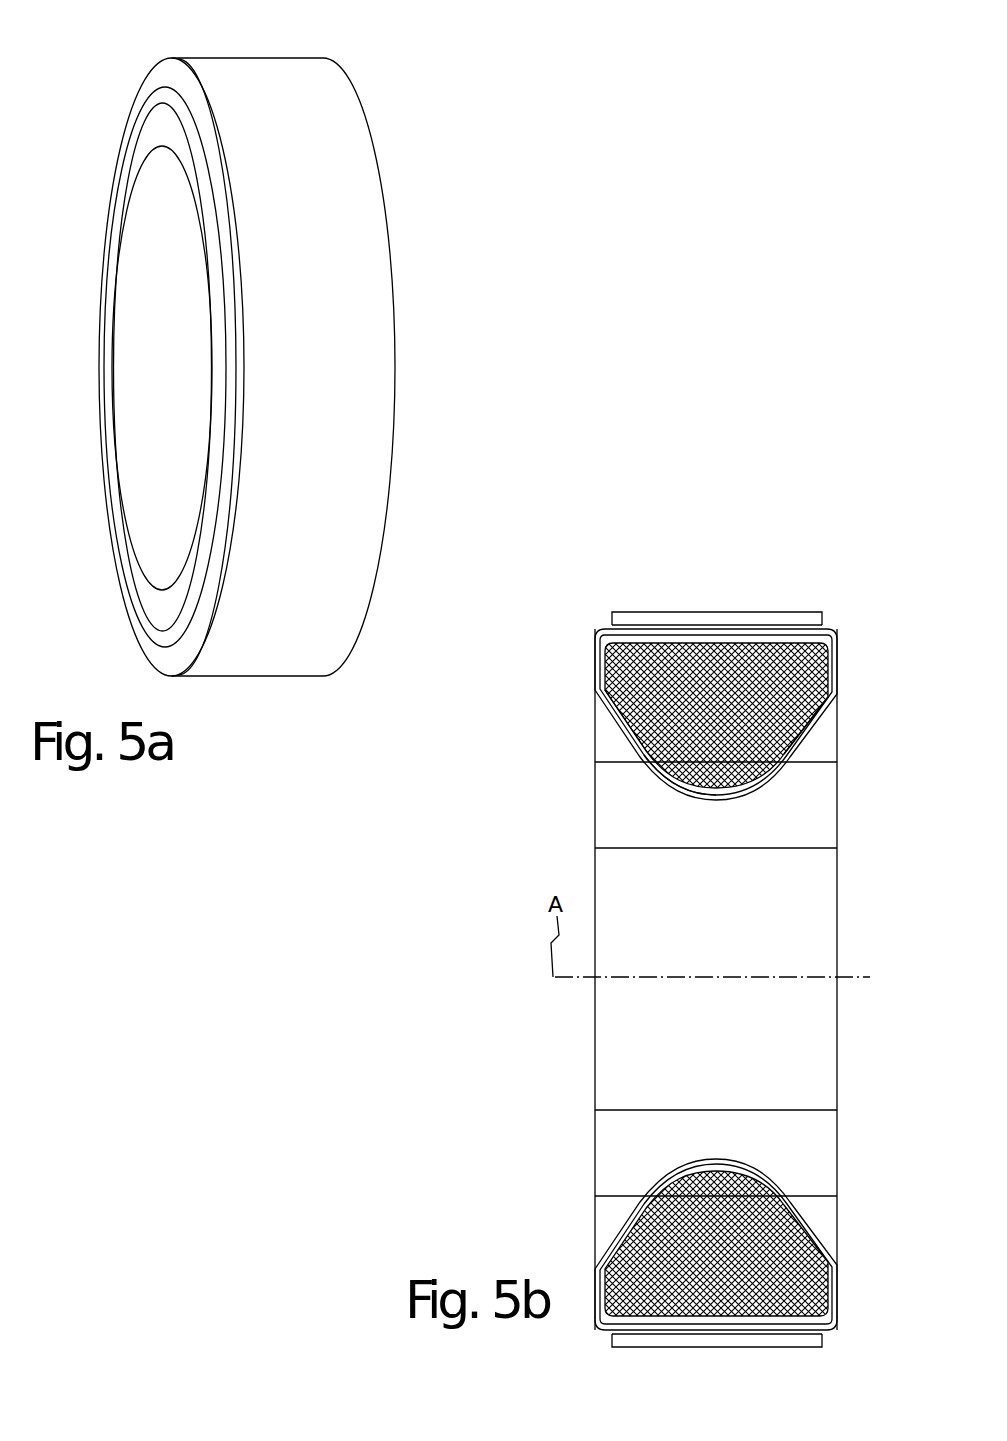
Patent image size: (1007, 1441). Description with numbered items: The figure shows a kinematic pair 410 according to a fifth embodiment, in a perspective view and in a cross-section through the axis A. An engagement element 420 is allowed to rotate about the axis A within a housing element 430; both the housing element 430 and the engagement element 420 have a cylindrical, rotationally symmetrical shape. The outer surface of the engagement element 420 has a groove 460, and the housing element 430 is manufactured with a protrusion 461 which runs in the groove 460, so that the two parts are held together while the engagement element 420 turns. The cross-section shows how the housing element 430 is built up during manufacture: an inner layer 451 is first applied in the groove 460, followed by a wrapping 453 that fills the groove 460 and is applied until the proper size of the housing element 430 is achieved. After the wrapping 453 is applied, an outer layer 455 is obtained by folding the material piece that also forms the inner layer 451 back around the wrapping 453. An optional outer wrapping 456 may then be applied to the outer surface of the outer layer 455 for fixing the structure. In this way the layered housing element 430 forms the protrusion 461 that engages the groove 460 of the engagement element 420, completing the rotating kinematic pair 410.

In FIG. 5A, the sealing ring assembly 410 is at (417, 148).
In FIG. 5A, the engagement element 420 is at (118, 118).
In FIG. 5B, the engagement element 420 is at (595, 770).
In FIG. 5A, the housing element 430 is at (353, 100).
In FIG. 5B, the housing element 430 is at (836, 630).
In FIG. 5B, the inner layer 451 is at (797, 742).
In FIG. 5B, the wrapping 453 is at (604, 671).
In FIG. 5B, the outer layer 455 is at (687, 625).
In FIG. 5B, the outer wrapping 456 is at (631, 612).
In FIG. 5B, the groove 460 is at (670, 788).
In FIG. 5B, the protrusion 461 is at (642, 768).